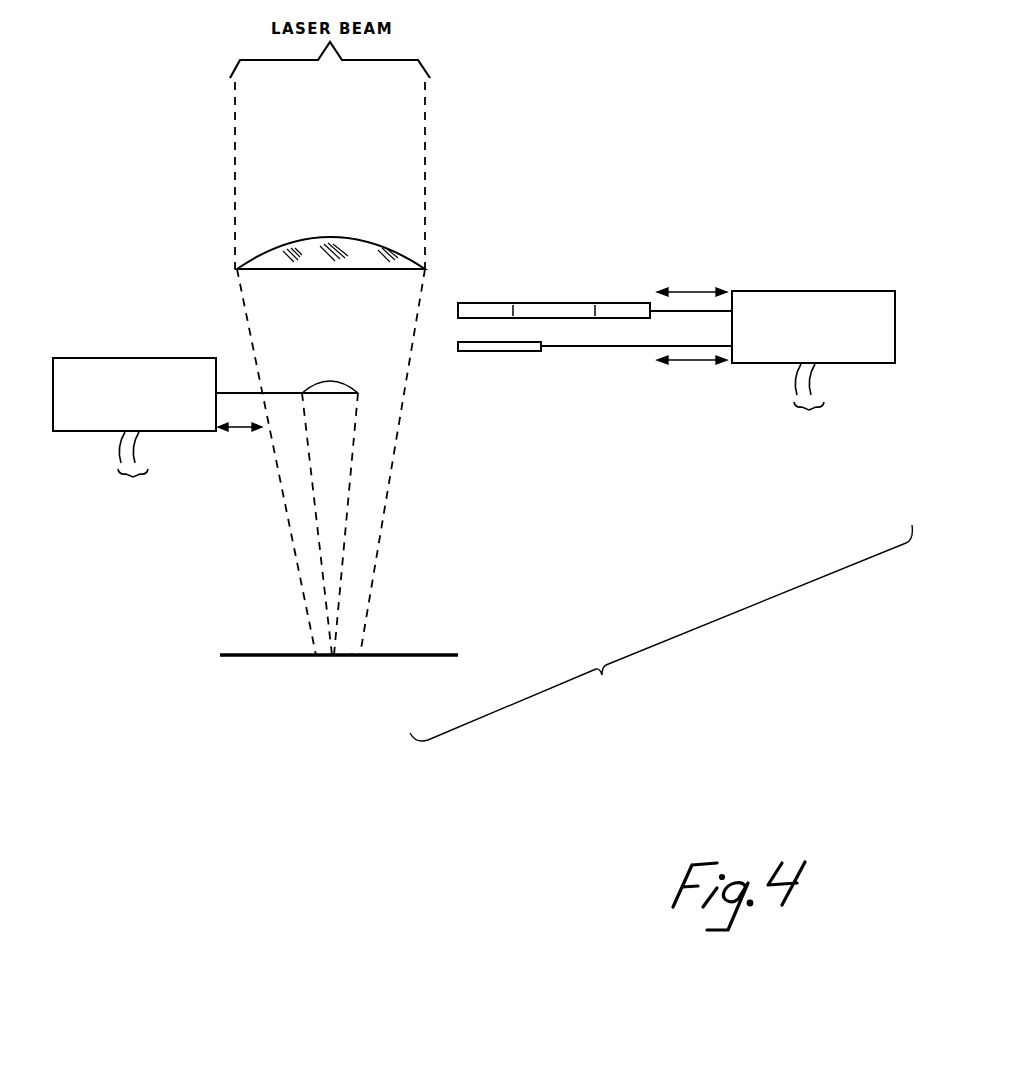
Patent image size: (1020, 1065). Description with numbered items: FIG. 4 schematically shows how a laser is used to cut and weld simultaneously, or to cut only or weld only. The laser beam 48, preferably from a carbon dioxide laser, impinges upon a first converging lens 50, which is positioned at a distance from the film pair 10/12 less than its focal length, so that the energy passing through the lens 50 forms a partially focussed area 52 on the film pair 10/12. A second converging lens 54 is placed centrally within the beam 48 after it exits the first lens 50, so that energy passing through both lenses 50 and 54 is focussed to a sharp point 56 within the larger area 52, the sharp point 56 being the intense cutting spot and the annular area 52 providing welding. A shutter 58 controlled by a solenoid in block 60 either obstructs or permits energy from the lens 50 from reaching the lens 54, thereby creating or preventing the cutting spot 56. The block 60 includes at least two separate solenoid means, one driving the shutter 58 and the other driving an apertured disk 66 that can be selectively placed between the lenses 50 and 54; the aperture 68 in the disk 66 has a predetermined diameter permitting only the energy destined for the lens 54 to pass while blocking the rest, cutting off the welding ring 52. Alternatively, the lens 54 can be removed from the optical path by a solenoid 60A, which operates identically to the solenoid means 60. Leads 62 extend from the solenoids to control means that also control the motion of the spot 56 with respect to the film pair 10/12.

The film 10 is at (371, 637).
The film 12 is at (455, 655).
The laser beam 48 is at (402, 112).
The first converging lens 50 is at (392, 251).
The partially focussed area 52 is at (352, 653).
The second converging lens 54 is at (358, 393).
The sharp point 56 is at (330, 653).
The shutter 58 is at (527, 351).
The solenoid 60 is at (800, 291).
The solenoid 60A is at (122, 358).
The leads 62 is at (466, 458).
The apertured disk 66 is at (622, 302).
The aperture 68 is at (566, 302).